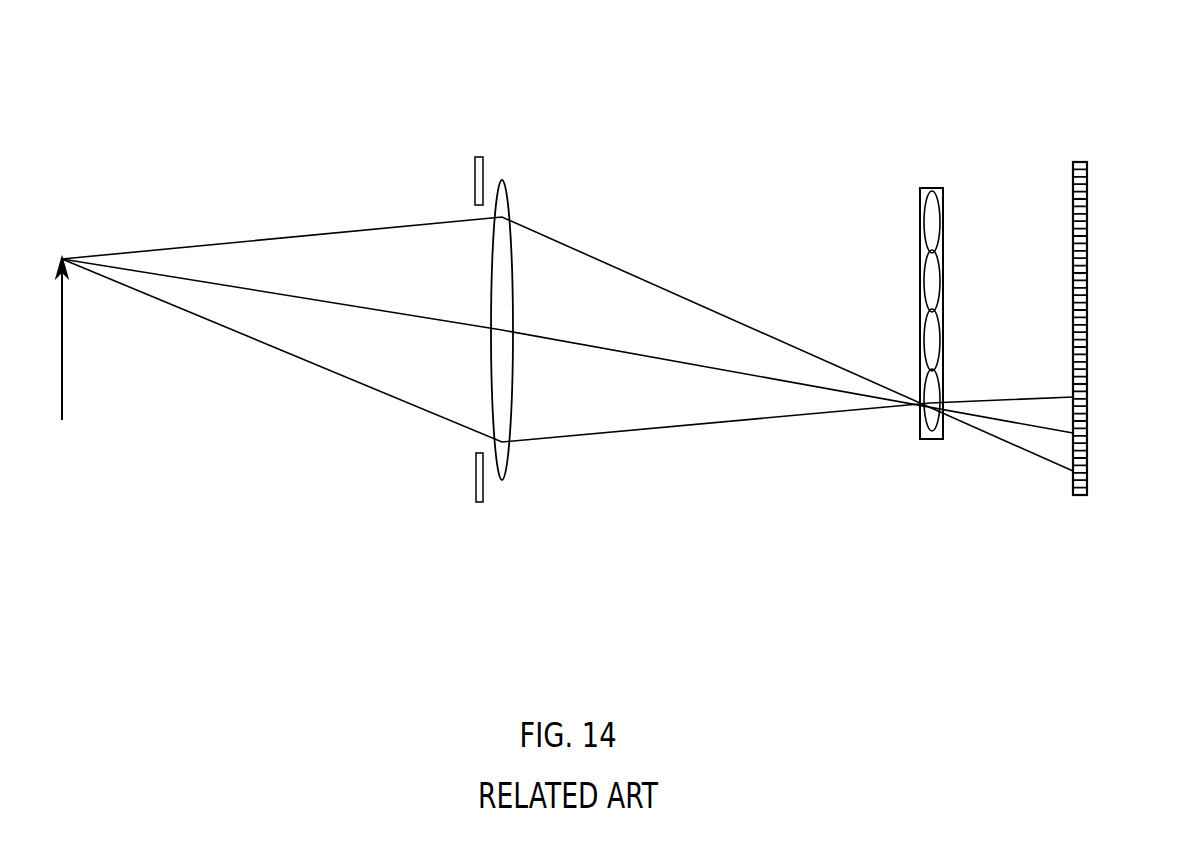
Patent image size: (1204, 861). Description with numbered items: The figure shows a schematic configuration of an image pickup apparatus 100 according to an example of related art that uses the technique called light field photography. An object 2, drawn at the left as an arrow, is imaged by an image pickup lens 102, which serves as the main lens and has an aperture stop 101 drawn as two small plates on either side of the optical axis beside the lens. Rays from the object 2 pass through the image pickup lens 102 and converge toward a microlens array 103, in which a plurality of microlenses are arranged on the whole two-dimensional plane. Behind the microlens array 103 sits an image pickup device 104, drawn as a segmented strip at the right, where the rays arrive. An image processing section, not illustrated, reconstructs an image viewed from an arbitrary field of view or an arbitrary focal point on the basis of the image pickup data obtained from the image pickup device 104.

The image pickup apparatus 100 is at (286, 76).
The object 2 is at (62, 405).
The aperture stop 101 is at (478, 503).
The image pickup lens 102 is at (502, 180).
The microlens array 103 is at (873, 243).
The image pickup device 104 is at (1146, 458).